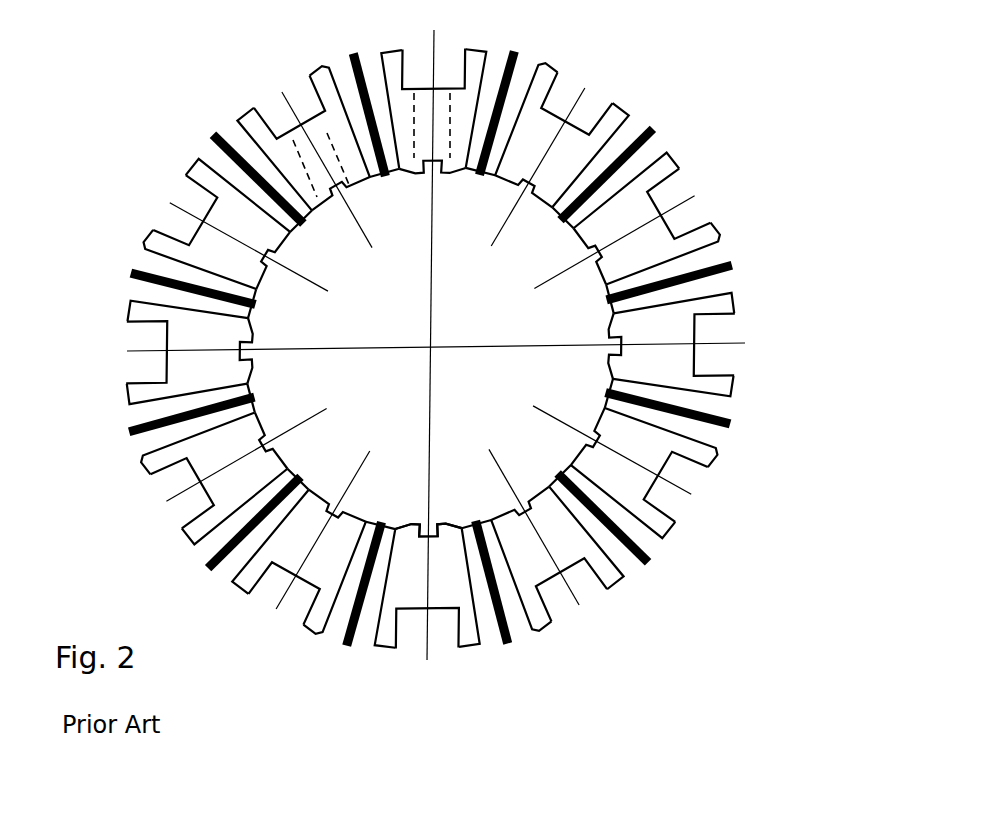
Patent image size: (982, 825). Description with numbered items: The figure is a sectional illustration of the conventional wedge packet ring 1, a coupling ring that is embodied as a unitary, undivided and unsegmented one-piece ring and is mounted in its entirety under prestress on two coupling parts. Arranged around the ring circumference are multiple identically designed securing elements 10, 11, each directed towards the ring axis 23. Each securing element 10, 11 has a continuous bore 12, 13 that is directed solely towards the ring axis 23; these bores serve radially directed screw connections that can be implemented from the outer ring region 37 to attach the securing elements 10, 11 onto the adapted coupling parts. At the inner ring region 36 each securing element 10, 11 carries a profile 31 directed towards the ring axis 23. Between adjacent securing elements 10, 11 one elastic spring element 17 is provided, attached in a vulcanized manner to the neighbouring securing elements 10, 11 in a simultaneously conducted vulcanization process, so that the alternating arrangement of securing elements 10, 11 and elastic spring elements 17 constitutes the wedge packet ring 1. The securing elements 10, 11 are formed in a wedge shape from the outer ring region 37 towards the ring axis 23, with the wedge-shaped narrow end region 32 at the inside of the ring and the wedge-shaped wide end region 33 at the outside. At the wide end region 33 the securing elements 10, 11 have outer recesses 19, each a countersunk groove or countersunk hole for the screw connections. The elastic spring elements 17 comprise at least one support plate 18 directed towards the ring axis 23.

The wedge packet ring 1 is at (426, 335).
The securing element 10 is at (668, 204).
The securing element 11 is at (716, 205).
The bore 12 is at (439, 140).
The bore 13 is at (348, 185).
The elastic spring element 17 is at (707, 408).
The support plate 18 is at (686, 192).
The outer recess 19 is at (758, 254).
The ring axis 23 is at (436, 345).
The profile 31 is at (432, 278).
The wedge-shaped narrow end region 32 is at (570, 415).
The wedge-shaped wide end region 33 is at (708, 485).
The inner ring region 36 is at (474, 460).
The outer ring region 37 is at (605, 551).